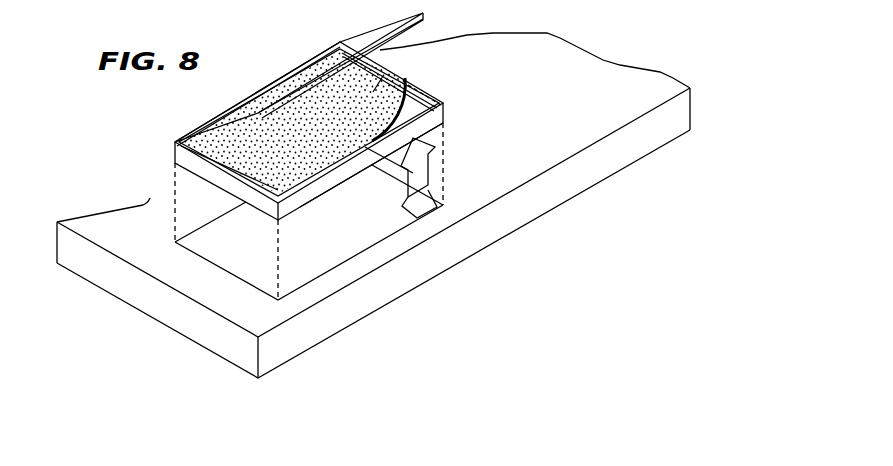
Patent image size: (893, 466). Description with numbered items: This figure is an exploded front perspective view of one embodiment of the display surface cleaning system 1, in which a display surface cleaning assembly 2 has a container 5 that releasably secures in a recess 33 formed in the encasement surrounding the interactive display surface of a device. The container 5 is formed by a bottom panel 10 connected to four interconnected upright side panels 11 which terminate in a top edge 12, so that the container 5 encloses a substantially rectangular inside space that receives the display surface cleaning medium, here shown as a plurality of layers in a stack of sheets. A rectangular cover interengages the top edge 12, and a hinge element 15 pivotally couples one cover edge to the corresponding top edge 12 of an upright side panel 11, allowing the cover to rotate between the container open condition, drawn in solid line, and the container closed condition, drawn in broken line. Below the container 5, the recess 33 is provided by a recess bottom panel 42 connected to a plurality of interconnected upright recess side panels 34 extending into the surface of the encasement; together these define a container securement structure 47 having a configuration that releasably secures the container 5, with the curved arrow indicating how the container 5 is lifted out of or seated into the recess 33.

The display surface cleaning system 1 is at (579, 10).
The display surface cleaning assembly 2 is at (200, 105).
The container 5 is at (446, 118).
The bottom panel 10 is at (208, 185).
The upright side panels 11 is at (180, 153).
The top edge 12 is at (352, 172).
The hinge element 15 is at (175, 143).
The recess 33 is at (329, 248).
The upright recess side panels 34 is at (217, 224).
The recess bottom panel 42 is at (349, 233).
The container securement structure 47 is at (412, 229).